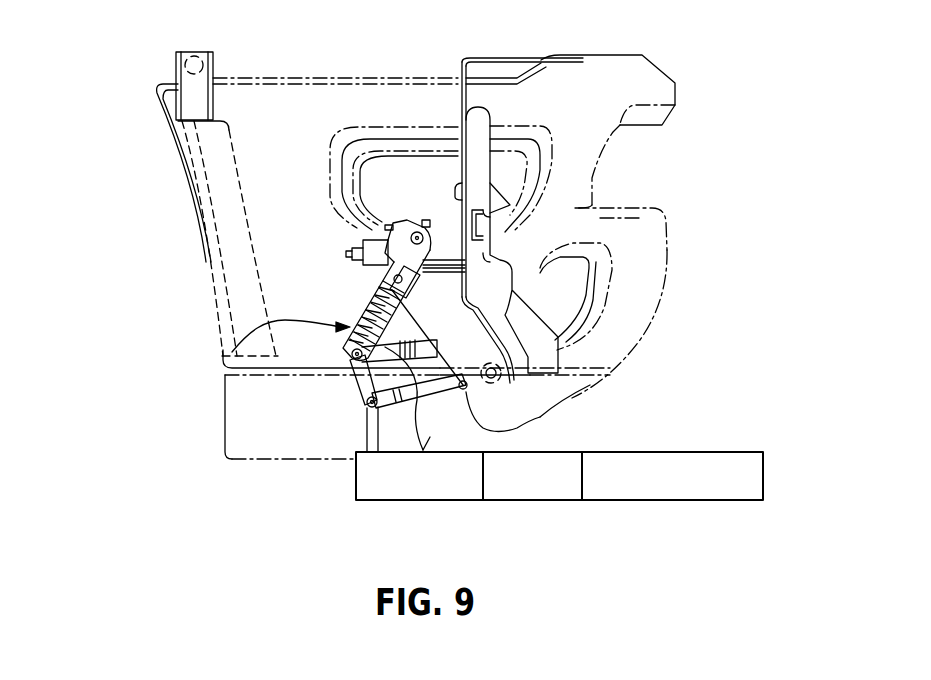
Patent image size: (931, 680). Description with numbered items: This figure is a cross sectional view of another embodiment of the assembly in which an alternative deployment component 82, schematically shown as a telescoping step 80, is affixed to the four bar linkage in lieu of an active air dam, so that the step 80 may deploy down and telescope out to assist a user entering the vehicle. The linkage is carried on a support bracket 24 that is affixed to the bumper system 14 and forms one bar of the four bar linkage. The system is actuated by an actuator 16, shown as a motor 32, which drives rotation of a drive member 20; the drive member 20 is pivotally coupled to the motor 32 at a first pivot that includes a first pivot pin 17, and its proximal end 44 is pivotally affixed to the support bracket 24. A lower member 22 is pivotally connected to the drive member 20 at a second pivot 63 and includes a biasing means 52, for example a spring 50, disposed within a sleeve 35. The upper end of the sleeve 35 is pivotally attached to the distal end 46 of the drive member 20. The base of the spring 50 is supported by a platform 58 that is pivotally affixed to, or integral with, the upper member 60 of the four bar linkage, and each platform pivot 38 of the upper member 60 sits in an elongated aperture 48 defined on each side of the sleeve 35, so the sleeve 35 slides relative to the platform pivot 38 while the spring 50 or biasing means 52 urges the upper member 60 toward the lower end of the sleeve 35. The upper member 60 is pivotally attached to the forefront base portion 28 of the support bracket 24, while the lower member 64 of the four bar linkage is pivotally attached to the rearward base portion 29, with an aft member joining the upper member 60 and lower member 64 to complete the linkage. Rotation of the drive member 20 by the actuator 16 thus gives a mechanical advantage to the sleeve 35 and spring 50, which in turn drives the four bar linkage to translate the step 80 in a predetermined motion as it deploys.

The bumper system 14 is at (490, 153).
The actuator 16 is at (362, 243).
The first pivot pin 17 is at (417, 232).
The drive member 20 is at (385, 226).
The lower member 22 is at (230, 352).
The support bracket 24 is at (432, 240).
The forefront base portion 28 is at (540, 418).
The rearward base portion 29 is at (476, 430).
The motor 32 is at (375, 252).
The sleeve 35 is at (392, 262).
The platform pivot 38 is at (352, 380).
The proximal end 44 is at (407, 220).
The distal end 46 is at (370, 347).
The elongated aperture 48 is at (375, 335).
The spring 50 is at (367, 412).
The biasing means 52 is at (372, 429).
The platform 58 is at (352, 349).
The upper member 60 is at (386, 347).
The second pivot 63 is at (346, 253).
The lower member 64 is at (473, 400).
The telescoping step 80 is at (722, 452).
The alternative deployment component 82 is at (559, 476).